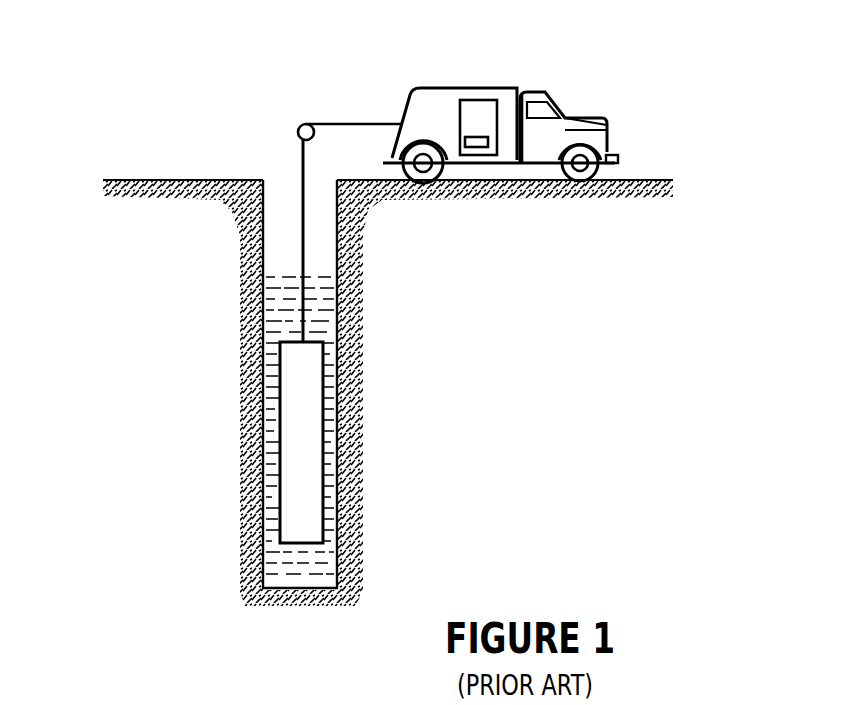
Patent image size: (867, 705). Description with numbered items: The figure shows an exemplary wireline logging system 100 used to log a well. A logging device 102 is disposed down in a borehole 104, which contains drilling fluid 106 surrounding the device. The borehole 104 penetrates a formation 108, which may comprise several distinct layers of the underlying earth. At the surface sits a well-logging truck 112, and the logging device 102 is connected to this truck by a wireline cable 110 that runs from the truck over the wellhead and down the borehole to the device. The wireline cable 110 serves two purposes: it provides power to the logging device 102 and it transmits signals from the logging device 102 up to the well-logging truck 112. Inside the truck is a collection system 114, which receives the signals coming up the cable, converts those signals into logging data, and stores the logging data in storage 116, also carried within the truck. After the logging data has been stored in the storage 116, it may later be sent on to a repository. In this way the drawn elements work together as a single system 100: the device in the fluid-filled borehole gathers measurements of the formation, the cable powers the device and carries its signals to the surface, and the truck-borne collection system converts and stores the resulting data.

The wireline logging system 100 is at (183, 46).
The logging device 102 is at (278, 437).
The borehole 104 is at (337, 510).
The drilling fluid 106 is at (262, 567).
The formation 108 is at (366, 249).
The wireline cable 110 is at (298, 160).
The well-logging truck 112 is at (610, 130).
The collection system 114 is at (465, 100).
The storage 116 is at (492, 150).